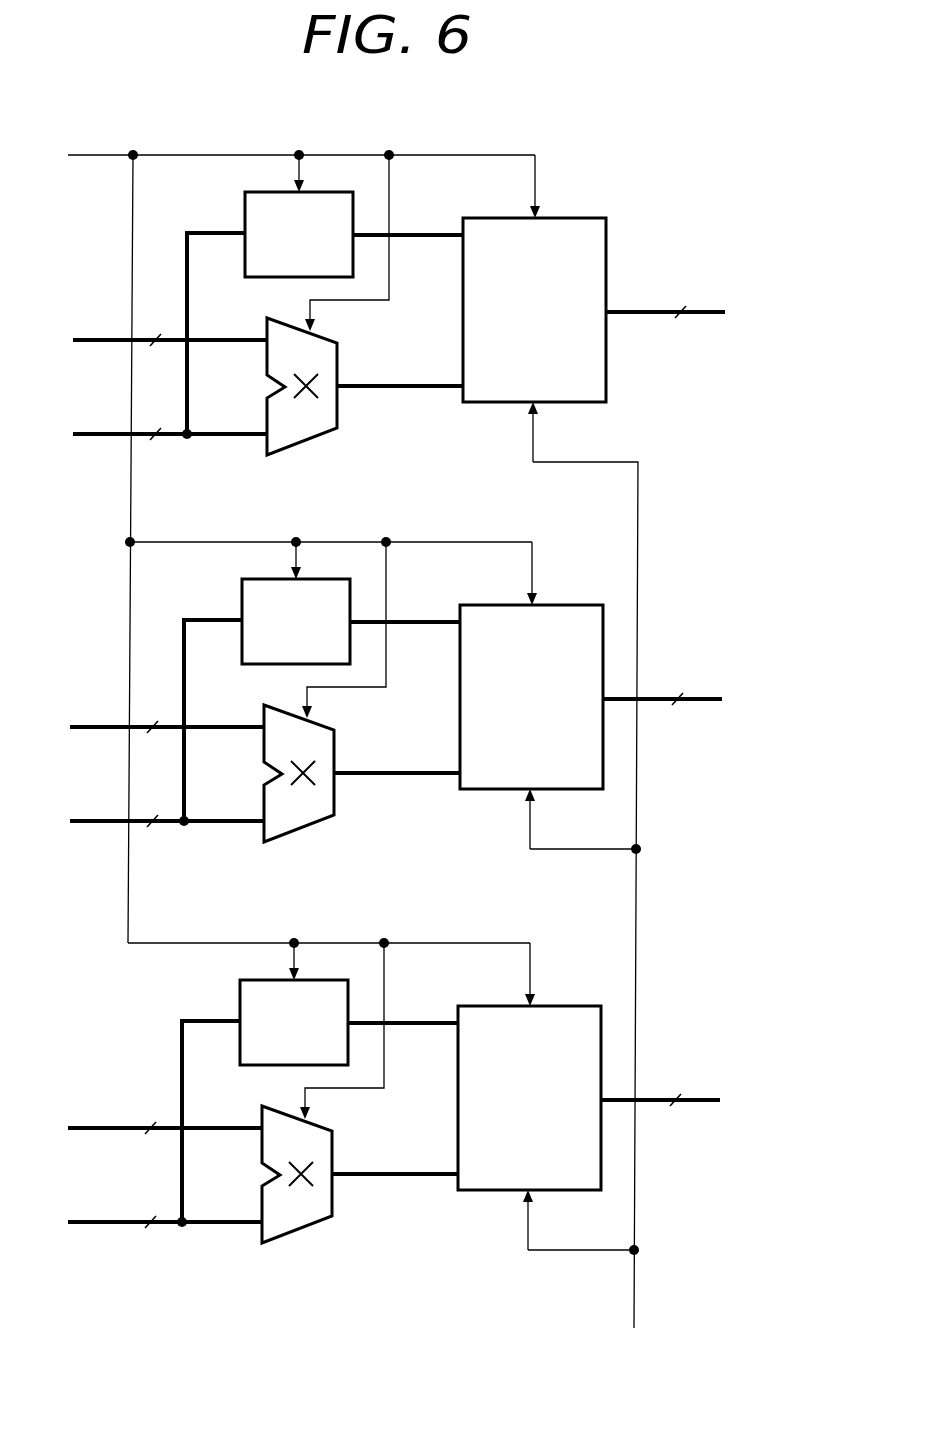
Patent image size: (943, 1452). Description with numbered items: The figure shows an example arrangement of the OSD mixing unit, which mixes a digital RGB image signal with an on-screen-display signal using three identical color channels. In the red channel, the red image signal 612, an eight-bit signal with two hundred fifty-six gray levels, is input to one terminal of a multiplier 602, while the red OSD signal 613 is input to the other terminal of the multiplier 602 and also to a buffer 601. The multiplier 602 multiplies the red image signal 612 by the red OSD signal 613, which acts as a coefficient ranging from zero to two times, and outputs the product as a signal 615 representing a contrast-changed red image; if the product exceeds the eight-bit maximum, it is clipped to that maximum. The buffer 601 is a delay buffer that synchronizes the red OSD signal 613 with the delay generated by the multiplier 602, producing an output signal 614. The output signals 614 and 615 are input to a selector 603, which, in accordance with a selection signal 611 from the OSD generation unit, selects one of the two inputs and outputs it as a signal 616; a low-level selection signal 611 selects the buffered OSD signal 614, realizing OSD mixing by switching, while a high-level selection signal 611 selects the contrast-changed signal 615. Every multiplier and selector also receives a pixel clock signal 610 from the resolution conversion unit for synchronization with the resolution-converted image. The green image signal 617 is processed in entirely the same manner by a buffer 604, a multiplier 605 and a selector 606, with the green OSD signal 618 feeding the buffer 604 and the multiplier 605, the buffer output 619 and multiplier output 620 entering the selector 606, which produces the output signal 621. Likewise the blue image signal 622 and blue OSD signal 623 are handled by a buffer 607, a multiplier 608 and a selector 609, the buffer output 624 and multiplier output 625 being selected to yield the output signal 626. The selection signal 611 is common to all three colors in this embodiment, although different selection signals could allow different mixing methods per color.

The buffer 601 is at (245, 210).
The multiplier 602 is at (338, 412).
The selector 603 is at (573, 216).
The buffer 604 is at (266, 608).
The multiplier 605 is at (339, 773).
The selector 606 is at (553, 705).
The buffer 607 is at (264, 1009).
The multiplier 608 is at (337, 1174).
The selector 609 is at (551, 1106).
The pixel clock signal 610 is at (115, 153).
The selection signal 611 is at (634, 1290).
The red image signal 612 is at (90, 338).
The red OSD signal 613 is at (90, 432).
The output signal of buffer 614 is at (418, 232).
The output signal of multiplier 615 is at (395, 384).
The output signal 616 is at (700, 309).
The green image signal 617 is at (148, 719).
The input data 618 is at (148, 736).
The buffer output 619 is at (405, 592).
The multiplier output 620 is at (397, 743).
The output signal 621 is at (687, 695).
The blue image signal 622 is at (146, 1120).
The input data 623 is at (146, 1137).
The buffer output 624 is at (403, 993).
The multiplier output 625 is at (395, 1144).
The output signal 626 is at (685, 1096).